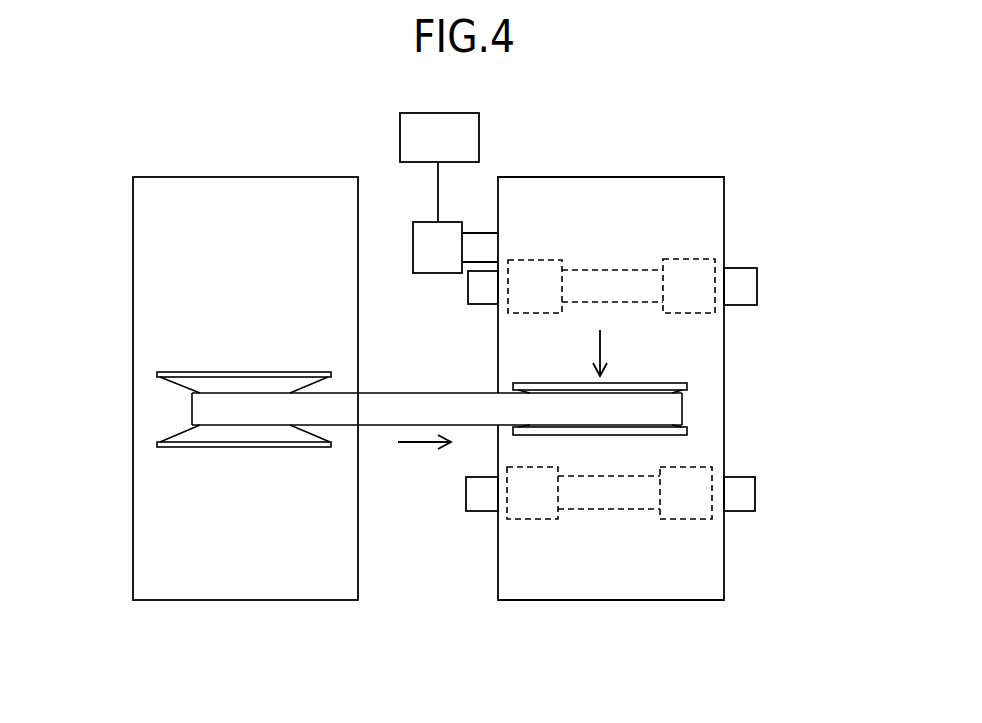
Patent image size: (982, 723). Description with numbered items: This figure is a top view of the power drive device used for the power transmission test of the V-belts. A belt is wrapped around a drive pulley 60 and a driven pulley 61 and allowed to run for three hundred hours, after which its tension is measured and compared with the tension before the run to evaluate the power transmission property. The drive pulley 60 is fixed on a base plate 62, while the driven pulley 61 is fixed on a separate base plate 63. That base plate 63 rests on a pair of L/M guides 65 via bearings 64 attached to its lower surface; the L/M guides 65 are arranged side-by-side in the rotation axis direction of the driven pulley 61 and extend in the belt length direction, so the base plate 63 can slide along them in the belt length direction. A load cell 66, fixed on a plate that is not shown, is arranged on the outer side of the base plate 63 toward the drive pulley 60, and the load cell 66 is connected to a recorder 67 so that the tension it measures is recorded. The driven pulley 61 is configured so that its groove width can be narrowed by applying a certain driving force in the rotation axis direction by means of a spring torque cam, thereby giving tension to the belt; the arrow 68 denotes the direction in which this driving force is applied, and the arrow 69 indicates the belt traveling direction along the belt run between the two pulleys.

The drive pulley 60 is at (240, 435).
The driven pulley 61 is at (640, 428).
The base plate 62 is at (157, 272).
The base plate 63 is at (704, 210).
The bearings 64 is at (685, 268).
The L/M guides 65 is at (747, 288).
The load cell 66 is at (435, 263).
The recorder 67 is at (400, 138).
The driving force direction 68 is at (600, 343).
The belt travel direction arrow 69 is at (415, 442).